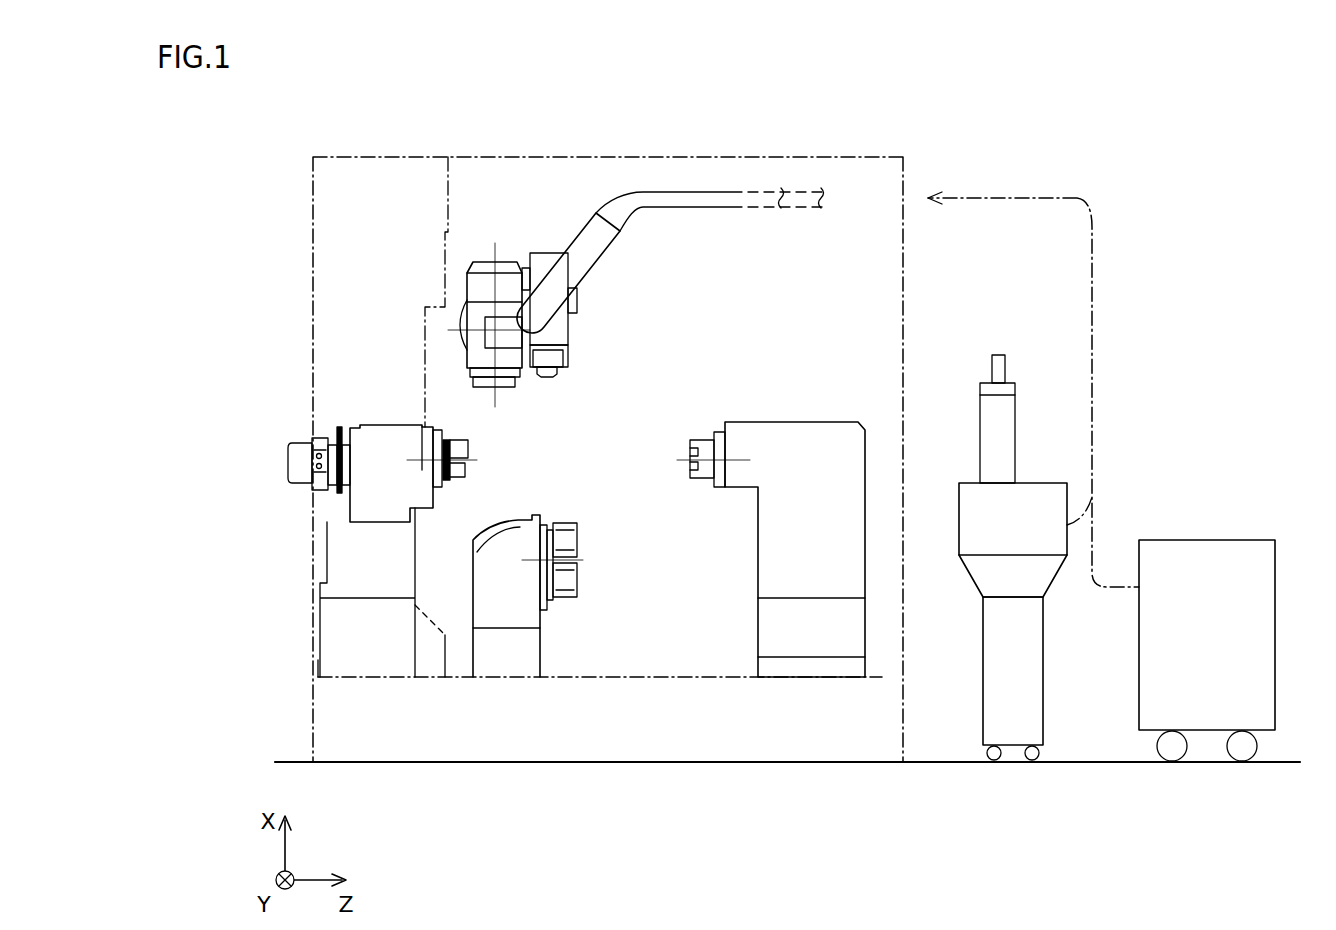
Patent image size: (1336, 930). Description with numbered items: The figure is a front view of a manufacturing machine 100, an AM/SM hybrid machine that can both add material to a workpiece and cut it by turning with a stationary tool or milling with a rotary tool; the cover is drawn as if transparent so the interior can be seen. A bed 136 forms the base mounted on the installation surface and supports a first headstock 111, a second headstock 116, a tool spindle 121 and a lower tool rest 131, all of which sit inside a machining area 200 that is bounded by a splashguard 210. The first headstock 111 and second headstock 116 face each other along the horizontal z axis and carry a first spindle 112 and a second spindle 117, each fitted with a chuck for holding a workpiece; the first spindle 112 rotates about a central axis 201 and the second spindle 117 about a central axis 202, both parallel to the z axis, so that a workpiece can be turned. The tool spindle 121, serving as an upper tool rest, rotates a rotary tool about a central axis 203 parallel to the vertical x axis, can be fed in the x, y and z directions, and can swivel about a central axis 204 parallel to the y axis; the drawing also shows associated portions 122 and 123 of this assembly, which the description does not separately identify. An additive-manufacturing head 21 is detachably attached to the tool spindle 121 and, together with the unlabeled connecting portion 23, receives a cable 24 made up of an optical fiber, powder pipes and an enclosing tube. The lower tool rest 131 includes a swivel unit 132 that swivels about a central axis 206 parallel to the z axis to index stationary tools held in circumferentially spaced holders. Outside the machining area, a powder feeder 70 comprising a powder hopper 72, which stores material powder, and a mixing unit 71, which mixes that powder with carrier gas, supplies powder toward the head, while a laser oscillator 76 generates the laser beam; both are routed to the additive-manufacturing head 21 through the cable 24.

The manufacturing machine 100 is at (301, 127).
The tool spindle 121 is at (448, 281).
The torch head block 122 is at (475, 344).
The nozzle portion 123 is at (499, 411).
The additive-manufacturing head 21 is at (553, 327).
The torch neck 23 is at (580, 245).
The cable 24 is at (725, 197).
The machining area 200 is at (672, 266).
The central axis 203 is at (490, 278).
The central axis 204 is at (497, 330).
The splashguard 210 is at (583, 157).
The first headstock 111 is at (359, 419).
The first spindle 112 is at (453, 447).
The central axis 201 is at (410, 463).
The lower tool rest 131 is at (468, 597).
The swivel unit 132 is at (563, 600).
The central axis 206 is at (530, 560).
The second headstock 116 is at (755, 565).
The second spindle 117 is at (706, 472).
The central axis 202 is at (737, 450).
The bed 136 is at (345, 722).
The powder feeder 70 is at (1006, 541).
The mixing unit 71 is at (980, 545).
The powder hopper 72 is at (990, 415).
The laser oscillator 76 is at (1146, 688).